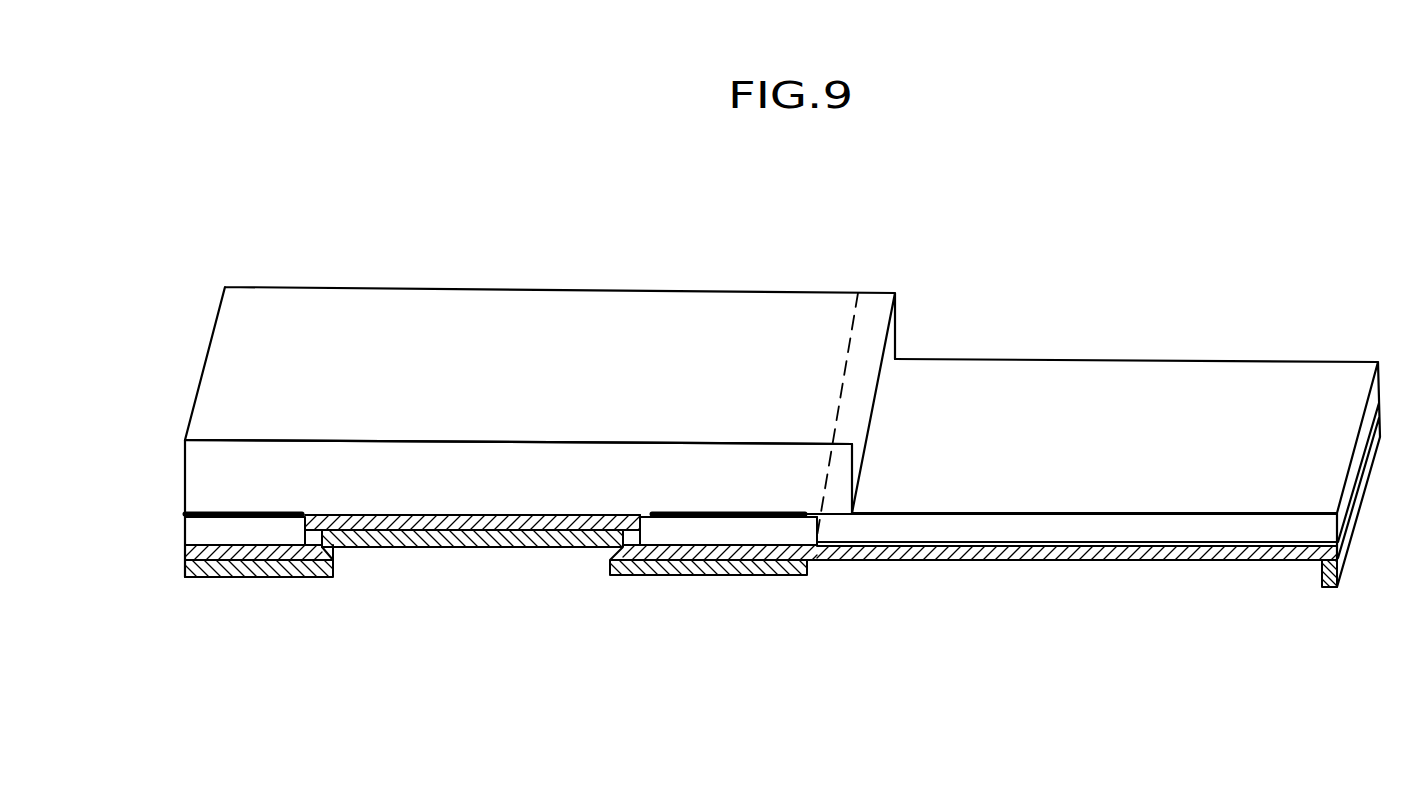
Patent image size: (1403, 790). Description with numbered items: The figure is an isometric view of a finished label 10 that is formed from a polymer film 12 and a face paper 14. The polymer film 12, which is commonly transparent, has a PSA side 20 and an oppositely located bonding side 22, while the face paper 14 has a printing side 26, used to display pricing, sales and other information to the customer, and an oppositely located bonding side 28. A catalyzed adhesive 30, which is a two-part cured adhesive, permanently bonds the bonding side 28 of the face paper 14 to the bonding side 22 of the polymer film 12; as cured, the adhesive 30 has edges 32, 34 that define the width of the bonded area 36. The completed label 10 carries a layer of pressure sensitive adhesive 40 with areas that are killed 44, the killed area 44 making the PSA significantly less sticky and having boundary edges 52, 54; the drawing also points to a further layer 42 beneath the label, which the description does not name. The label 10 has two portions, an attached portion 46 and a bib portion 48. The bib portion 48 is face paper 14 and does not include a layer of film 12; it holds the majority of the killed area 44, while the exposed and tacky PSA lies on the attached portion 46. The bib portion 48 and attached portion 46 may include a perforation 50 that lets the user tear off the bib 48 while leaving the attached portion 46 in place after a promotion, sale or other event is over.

The label 10 is at (603, 194).
The polymer film 12 is at (205, 540).
The face paper 14 is at (262, 465).
The PSA side 20 is at (1067, 543).
The bonding side 22 is at (1103, 512).
The printing side 26 is at (345, 442).
The bonding side 28 is at (375, 527).
The catalyzed adhesive 30 is at (218, 512).
The edge 32 is at (653, 512).
The edge 34 is at (800, 512).
The bonded area 36 is at (245, 498).
The pressure sensitive adhesive 40 is at (370, 547).
The second layer 42 is at (468, 548).
The killed area 44 is at (557, 570).
The attached portion 46 is at (1168, 310).
The bib portion 48 is at (462, 240).
The perforation 50 is at (848, 333).
The boundary edge 52 is at (1322, 572).
The boundary edge 54 is at (810, 562).